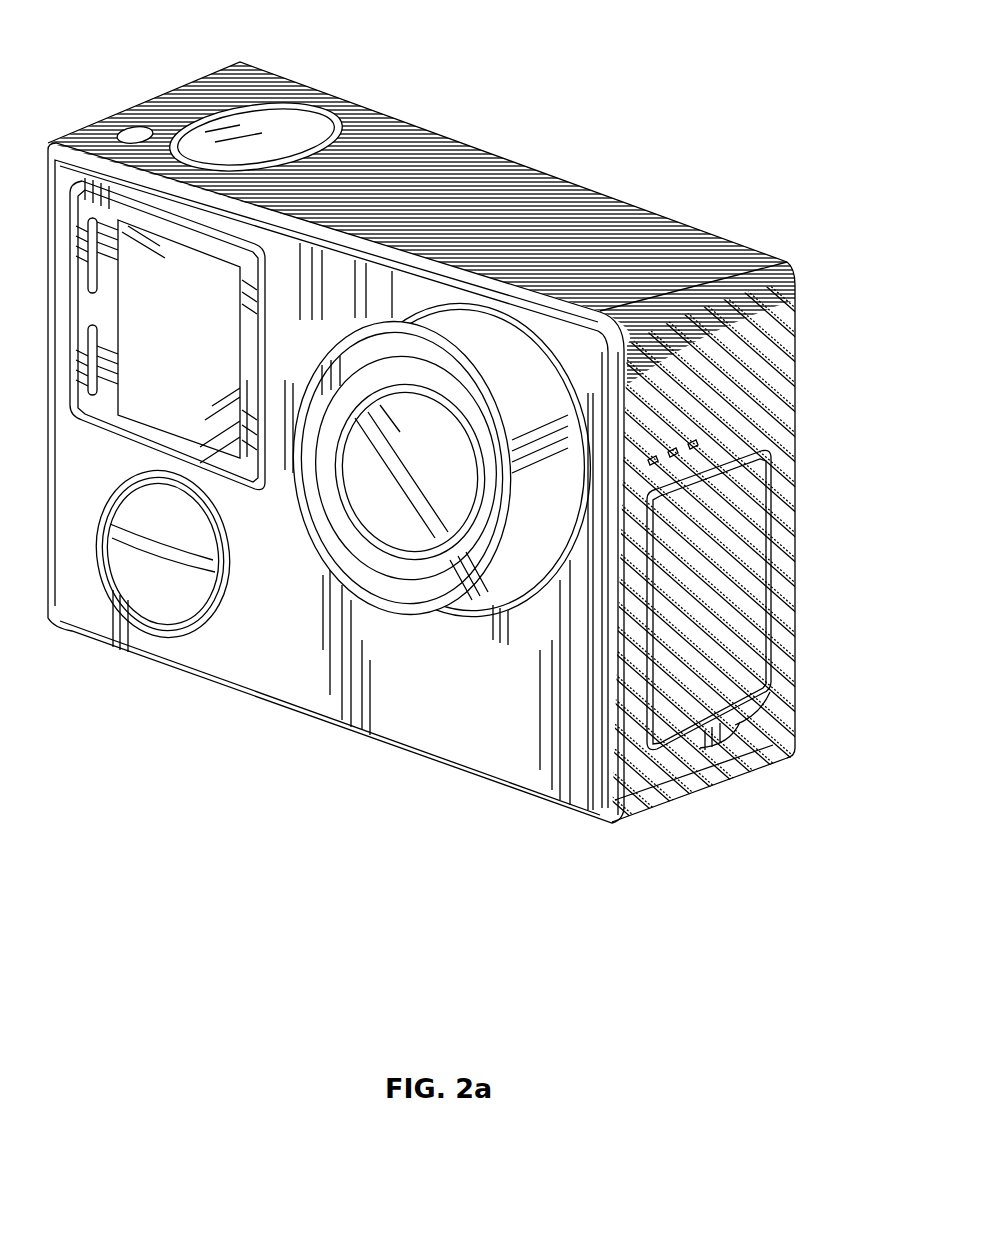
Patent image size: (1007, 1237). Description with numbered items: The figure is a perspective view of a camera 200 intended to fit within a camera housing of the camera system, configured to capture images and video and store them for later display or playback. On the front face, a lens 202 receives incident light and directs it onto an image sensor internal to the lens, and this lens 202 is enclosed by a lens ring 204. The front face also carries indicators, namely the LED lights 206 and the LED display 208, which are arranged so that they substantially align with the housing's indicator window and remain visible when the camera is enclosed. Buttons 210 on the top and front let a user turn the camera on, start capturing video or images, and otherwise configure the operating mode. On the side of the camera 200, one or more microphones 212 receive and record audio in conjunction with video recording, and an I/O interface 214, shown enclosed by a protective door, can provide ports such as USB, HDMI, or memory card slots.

The camera 200 is at (112, 81).
The lens 202 is at (396, 528).
The lens ring 204 is at (505, 588).
The LED lights 206 is at (82, 267).
The LED display 208 is at (188, 349).
The buttons 210 is at (287, 134).
The microphones 212 is at (694, 440).
The I/O interface 214 is at (740, 624).